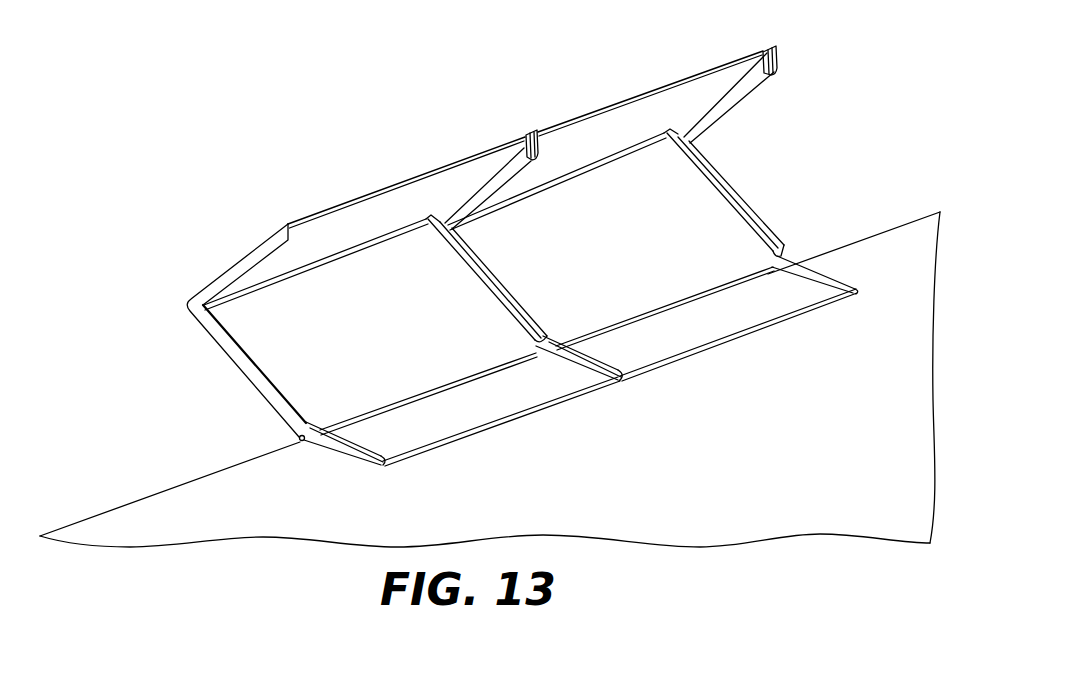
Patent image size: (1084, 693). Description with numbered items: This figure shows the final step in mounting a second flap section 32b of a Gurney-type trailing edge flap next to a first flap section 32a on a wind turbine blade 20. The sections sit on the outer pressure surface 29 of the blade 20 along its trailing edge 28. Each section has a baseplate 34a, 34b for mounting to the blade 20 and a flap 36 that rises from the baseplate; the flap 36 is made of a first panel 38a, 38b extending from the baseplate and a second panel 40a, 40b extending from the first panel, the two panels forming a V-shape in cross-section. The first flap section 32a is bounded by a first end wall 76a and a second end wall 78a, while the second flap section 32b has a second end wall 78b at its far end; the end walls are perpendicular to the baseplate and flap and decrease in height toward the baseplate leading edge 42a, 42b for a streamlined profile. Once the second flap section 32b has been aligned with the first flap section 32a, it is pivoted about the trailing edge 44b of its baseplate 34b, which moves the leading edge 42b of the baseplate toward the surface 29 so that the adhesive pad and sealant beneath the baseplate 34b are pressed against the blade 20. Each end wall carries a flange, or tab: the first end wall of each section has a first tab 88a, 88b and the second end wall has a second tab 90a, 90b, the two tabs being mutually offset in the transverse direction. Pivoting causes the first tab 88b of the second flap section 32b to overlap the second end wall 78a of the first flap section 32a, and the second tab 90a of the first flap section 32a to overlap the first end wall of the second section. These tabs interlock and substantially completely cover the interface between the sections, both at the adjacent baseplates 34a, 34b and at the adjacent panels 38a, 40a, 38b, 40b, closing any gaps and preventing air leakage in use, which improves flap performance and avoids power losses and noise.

The wind turbine blade 20 is at (768, 513).
The trailing edge 28 is at (873, 233).
The outer surface 29 is at (150, 493).
The first flap section 32a is at (358, 126).
The second flap section 32b is at (641, 83).
The baseplate of the first flap section 34a is at (398, 423).
The baseplate of the second flap section 34b is at (648, 333).
The flap 36 is at (812, 122).
The first panel of the first flap section 38a is at (272, 368).
The first panel of the second flap section 38b is at (623, 242).
The second panel of the first flap section 40a is at (335, 215).
The second panel of the second flap section 40b is at (580, 143).
The leading edge of the baseplate of the first flap section 42a is at (540, 413).
The leading edge of the baseplate of the second flap section 42b is at (763, 323).
The trailing edge of the baseplate of the second flap section 44b is at (670, 310).
The first end wall of the first flap section 76a is at (223, 277).
The second end wall of the first flap section 78a is at (503, 163).
The second end wall of the second flap section 78b is at (751, 72).
The first tab of the first flap section 88a is at (312, 423).
The first tab of the second flap section 88b is at (547, 333).
The second tab of the first flap section 90a is at (513, 300).
The second tab of the second flap section 90b is at (748, 212).